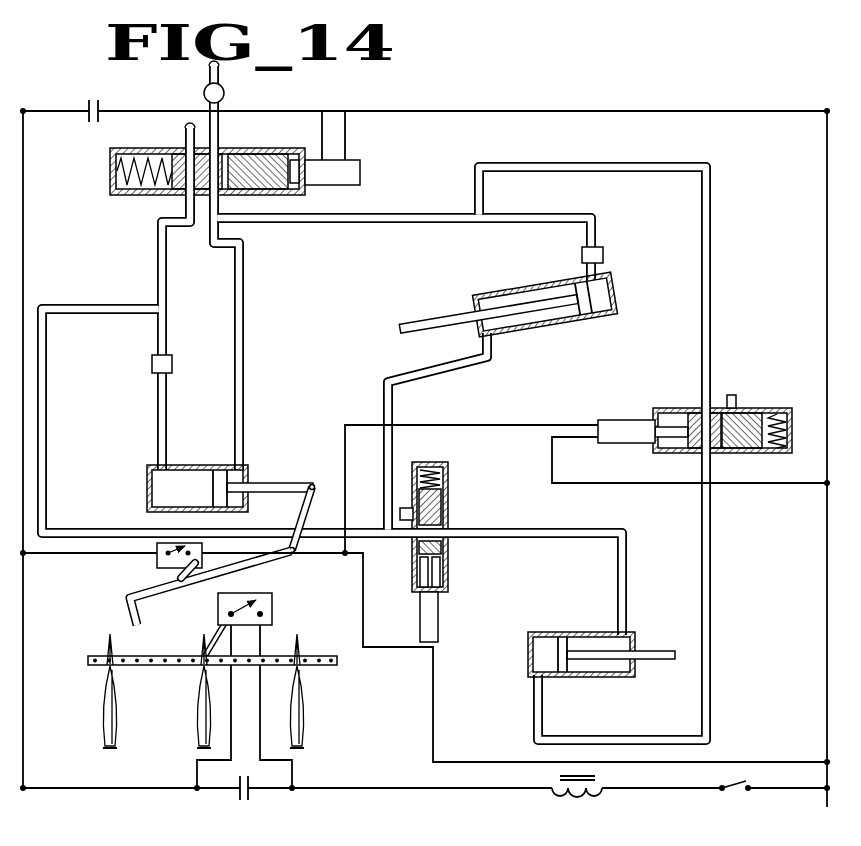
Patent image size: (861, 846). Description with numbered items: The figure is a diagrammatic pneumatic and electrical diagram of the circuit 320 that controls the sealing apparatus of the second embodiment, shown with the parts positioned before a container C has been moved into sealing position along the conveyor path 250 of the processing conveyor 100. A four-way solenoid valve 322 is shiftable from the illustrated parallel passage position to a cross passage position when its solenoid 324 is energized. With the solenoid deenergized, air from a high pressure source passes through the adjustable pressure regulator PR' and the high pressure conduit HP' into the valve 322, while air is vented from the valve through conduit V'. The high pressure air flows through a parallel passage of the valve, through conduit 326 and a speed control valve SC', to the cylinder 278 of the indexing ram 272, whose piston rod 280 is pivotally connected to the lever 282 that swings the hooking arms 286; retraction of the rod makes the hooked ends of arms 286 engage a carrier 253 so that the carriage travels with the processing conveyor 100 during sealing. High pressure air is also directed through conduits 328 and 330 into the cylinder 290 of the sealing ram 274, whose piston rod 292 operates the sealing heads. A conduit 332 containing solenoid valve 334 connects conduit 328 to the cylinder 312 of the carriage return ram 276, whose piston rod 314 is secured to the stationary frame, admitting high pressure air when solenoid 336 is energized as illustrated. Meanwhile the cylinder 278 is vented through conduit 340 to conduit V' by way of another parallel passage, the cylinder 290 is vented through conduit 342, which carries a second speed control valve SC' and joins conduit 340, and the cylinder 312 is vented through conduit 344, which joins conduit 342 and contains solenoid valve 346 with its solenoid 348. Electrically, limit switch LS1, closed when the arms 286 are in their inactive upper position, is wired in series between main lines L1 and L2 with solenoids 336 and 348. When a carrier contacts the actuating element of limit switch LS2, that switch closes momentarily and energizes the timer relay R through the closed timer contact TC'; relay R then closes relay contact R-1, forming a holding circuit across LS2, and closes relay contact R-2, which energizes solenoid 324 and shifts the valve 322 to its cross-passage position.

The pneumatic and electrical circuit 320 is at (492, 103).
The four-way solenoid valve 322 is at (110, 166).
The solenoid 324 is at (360, 172).
The conduit 326 is at (155, 266).
The conduit 328 is at (48, 407).
The conduit 330 is at (383, 405).
The conduit 332 is at (484, 532).
The solenoid valve 334 is at (448, 468).
The solenoid 336 is at (430, 603).
The conduit 340 is at (247, 343).
The conduit 342 is at (390, 222).
The conduit 344 is at (611, 165).
The solenoid valve 346 is at (765, 407).
The solenoid 348 is at (611, 421).
The indexing ram 272 is at (144, 498).
The sealing ram 274 is at (585, 327).
The carriage return ram 276 is at (526, 677).
The cylinder 278 is at (147, 476).
The piston rod 280 is at (276, 467).
The lever 282 is at (335, 478).
The hooking arms 286 is at (128, 607).
The cylinder 290 is at (510, 290).
The piston rod 292 is at (418, 323).
The cylinder 312 is at (528, 655).
The piston rod 314 is at (657, 648).
The conveyor 250 is at (89, 660).
The carrier 253 is at (199, 743).
The processing conveyor 100 is at (343, 660).
The container C is at (193, 686).
The main line L1 is at (23, 100).
The main line L2 is at (827, 98).
The relay contact R-1 is at (240, 797).
The relay contact R-2 is at (99, 108).
The relay R is at (572, 798).
The timer contact TC' is at (746, 798).
The pressure regulator PR' is at (232, 84).
The high pressure conduit HP' is at (163, 131).
The vent conduit V' is at (235, 102).
The speed control valve SC' is at (368, 303).
The limit switch LS1 is at (157, 565).
The limit switch LS2 is at (243, 602).